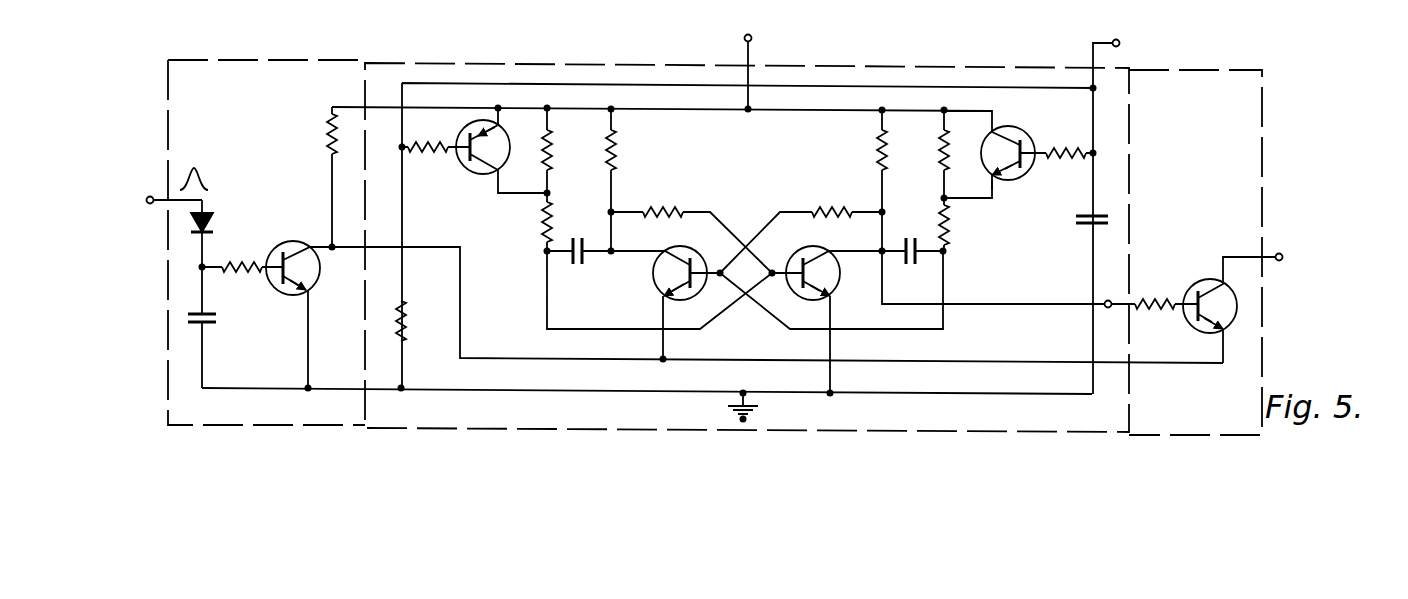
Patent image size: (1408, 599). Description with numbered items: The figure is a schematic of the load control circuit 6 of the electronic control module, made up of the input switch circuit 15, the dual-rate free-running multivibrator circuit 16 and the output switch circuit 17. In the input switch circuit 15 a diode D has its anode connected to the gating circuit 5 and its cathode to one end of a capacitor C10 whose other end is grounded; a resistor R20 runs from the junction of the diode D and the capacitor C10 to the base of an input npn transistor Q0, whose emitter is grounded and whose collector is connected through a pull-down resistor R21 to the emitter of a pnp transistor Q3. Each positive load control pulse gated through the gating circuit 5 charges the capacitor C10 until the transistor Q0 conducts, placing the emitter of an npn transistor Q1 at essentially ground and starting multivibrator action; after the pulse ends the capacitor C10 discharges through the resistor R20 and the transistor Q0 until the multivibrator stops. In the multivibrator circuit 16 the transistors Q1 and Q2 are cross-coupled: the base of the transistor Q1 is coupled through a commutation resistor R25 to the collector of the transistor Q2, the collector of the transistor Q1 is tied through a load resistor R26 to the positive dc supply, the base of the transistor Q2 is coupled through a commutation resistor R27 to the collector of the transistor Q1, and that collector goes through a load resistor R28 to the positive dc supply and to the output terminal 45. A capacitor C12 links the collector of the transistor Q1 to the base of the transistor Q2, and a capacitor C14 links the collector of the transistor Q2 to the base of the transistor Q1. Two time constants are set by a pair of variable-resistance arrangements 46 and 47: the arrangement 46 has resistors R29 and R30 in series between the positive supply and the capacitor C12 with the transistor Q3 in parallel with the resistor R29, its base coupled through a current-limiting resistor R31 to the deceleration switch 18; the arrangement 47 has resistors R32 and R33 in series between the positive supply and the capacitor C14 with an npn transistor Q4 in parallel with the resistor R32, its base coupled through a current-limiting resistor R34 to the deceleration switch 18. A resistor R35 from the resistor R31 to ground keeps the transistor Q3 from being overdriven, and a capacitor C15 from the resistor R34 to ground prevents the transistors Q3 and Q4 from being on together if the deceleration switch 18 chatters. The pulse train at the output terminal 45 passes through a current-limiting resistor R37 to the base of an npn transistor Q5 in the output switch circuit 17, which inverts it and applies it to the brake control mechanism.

The gating circuit 5 is at (141, 200).
The load control circuit 6 is at (968, 64).
The input switch circuit 15 is at (284, 54).
The dual-rate free-running multivibrator circuit 16 is at (614, 56).
The output switch circuit 17 is at (1268, 93).
The deceleration switch 18 is at (1205, 31).
The output terminal 45 is at (1104, 301).
The variable-resistance arrangement 46 is at (494, 197).
The variable-resistance arrangement 47 is at (1010, 190).
The diode D is at (195, 233).
The capacitor C10 is at (218, 327).
The capacitor C12 is at (579, 240).
The capacitor C14 is at (912, 240).
The capacitor C15 is at (1076, 220).
The resistor R20 is at (242, 278).
The pull-down resistor R21 is at (317, 177).
The commutation resistor R25 is at (801, 230).
The load resistor R26 is at (628, 180).
The commutation resistor R27 is at (691, 230).
The load resistor R28 is at (865, 180).
The resistor R29 is at (564, 150).
The resistor R30 is at (526, 222).
The current-limiting resistor R31 is at (436, 136).
The resistor R32 is at (926, 154).
The resistor R33 is at (960, 224).
The current-limiting resistor R34 is at (1056, 143).
The resistor R35 is at (418, 321).
The current-limiting resistor R37 is at (1155, 293).
The input npn transistor Q0 is at (304, 314).
The npn transistor Q1 is at (665, 302).
The npn transistor Q2 is at (827, 319).
The pnp transistor Q3 is at (499, 152).
The npn transistor Q4 is at (989, 152).
The npn transistor Q5 is at (1229, 310).